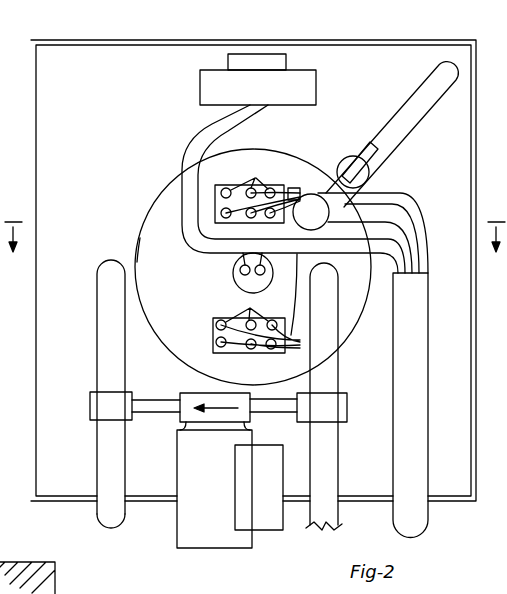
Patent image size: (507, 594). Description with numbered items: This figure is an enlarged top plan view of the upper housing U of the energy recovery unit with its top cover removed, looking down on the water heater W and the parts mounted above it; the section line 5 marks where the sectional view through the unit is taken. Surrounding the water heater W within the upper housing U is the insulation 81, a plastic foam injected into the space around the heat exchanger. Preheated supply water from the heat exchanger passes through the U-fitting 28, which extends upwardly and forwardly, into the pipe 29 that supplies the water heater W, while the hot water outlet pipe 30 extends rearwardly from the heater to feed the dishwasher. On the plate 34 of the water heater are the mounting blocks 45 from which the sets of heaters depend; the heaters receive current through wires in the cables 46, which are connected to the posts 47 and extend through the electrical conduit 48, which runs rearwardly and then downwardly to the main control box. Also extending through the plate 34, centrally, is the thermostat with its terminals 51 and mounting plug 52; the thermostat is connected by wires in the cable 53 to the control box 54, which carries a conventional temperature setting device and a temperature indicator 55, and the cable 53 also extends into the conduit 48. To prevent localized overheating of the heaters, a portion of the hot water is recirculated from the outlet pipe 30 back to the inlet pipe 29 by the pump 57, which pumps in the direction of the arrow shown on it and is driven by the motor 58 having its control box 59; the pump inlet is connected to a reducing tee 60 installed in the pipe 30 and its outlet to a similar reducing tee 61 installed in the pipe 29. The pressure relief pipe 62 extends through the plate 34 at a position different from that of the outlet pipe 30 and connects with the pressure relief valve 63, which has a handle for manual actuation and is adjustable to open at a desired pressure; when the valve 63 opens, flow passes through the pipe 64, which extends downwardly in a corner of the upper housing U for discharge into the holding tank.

The upper housing U is at (80, 38).
The water heater W is at (157, 200).
The section line 5- 5 is at (255, 226).
The U-fitting 28 is at (108, 528).
The pipe 29 is at (97, 310).
The hot water outlet pipe 30 is at (341, 360).
The plate 34 is at (139, 240).
The mounting block 45 is at (279, 183).
The cables 46 is at (312, 183).
The posts 47 is at (268, 188).
The electrical conduit 48 is at (423, 518).
The terminals 51 is at (240, 272).
The mounting plug 52 is at (238, 288).
The cable 53 is at (211, 128).
The control box 54 is at (276, 100).
The temperature indicator 55 is at (258, 60).
The pump 57 is at (186, 428).
The motor 58 is at (232, 548).
The control box 59 is at (250, 490).
The reducing tee 60 is at (348, 406).
The reducing tee 61 is at (92, 400).
The pressure relief pipe 62 is at (326, 222).
The pressure relief valve 63 is at (350, 142).
The pipe 64 is at (398, 113).
The insulation 81 is at (88, 113).